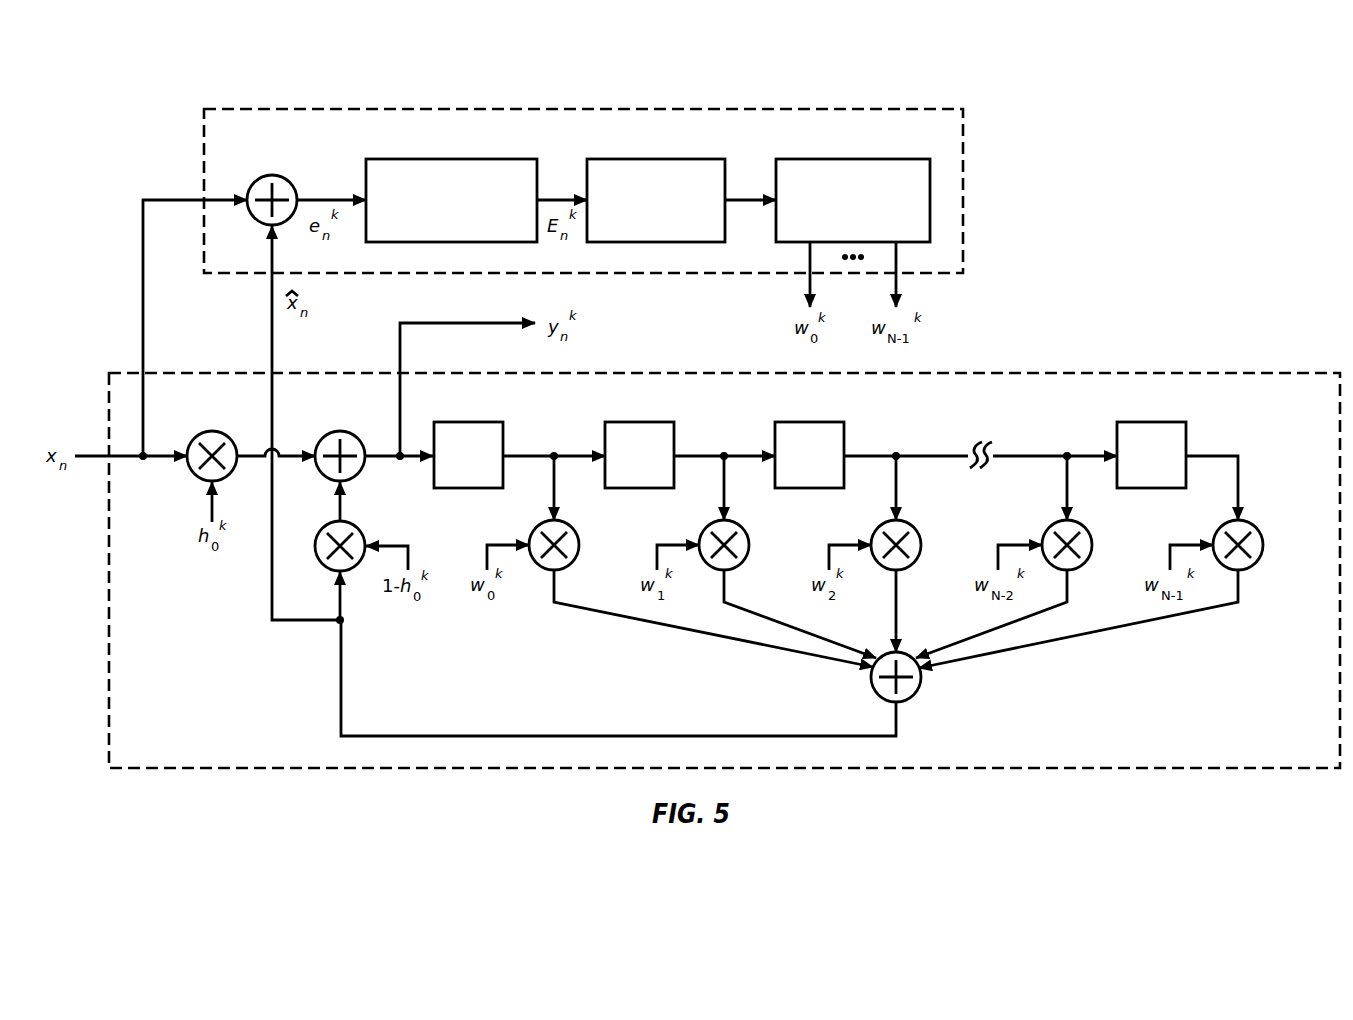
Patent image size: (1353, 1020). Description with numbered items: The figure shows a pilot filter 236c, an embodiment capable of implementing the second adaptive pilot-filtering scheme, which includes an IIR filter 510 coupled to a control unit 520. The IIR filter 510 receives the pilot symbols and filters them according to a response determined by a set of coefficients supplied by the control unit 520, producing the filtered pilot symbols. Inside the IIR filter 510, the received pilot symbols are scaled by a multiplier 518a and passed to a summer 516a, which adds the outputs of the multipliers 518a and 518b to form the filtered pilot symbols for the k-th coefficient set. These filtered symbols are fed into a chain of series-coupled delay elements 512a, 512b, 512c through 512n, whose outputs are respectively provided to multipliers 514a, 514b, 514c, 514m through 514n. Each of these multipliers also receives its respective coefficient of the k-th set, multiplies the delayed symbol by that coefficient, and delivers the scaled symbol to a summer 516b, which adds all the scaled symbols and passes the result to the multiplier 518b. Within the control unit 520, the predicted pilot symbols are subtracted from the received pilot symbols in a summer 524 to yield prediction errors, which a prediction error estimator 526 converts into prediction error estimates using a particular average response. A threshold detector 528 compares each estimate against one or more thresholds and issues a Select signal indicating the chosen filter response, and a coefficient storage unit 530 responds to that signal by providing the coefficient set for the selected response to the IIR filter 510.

The pilot filter 236c is at (1174, 87).
The control unit 520 is at (543, 110).
The summer 524 is at (264, 177).
The prediction error estimator 526 is at (457, 146).
The threshold detector 528 is at (660, 146).
The coefficient storage unit 530 is at (860, 146).
The IIR filter 510 is at (1025, 373).
The multiplier 518a is at (200, 433).
The summer 516a is at (344, 433).
The multiplier 518b is at (361, 532).
The delay element 512a is at (444, 423).
The delay element 512b is at (615, 423).
The delay element 512c is at (785, 423).
The delay element 512n is at (1127, 423).
The multiplier 514a is at (578, 541).
The multiplier 514b is at (748, 541).
The multiplier 514c is at (920, 541).
The multiplier 514m is at (1091, 541).
The multiplier 514n is at (1262, 541).
The summer 516b is at (907, 698).